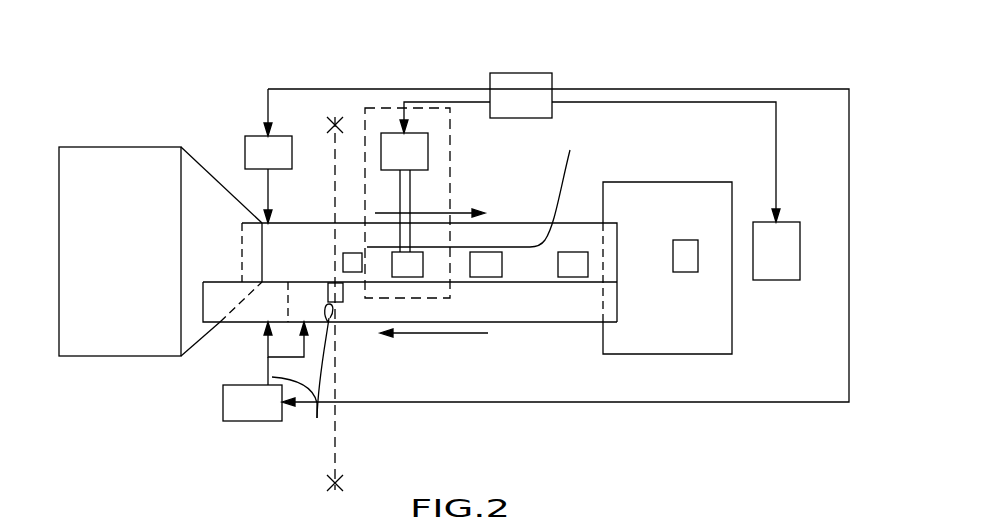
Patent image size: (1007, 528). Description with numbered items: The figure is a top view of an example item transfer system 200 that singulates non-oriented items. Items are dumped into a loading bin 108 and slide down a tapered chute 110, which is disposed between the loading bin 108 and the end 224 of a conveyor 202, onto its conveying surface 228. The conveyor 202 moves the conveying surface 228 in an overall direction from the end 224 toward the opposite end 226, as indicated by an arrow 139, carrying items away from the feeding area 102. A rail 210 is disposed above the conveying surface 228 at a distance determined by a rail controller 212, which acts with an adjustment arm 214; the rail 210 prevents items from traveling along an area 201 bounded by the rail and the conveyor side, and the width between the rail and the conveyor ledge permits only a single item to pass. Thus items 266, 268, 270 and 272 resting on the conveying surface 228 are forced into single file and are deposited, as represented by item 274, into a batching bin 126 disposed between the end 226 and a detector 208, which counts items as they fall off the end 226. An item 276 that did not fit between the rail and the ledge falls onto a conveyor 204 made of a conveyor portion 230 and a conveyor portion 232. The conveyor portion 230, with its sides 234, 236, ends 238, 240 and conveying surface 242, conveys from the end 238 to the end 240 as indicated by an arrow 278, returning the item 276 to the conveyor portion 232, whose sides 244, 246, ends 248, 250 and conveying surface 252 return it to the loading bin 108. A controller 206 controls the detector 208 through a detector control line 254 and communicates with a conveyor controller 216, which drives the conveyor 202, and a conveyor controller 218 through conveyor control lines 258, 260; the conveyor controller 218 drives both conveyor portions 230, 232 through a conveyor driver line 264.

The feeding area 102 is at (136, 378).
The loading bin 108 is at (117, 147).
The chute 110 is at (188, 148).
The batching bin 126 is at (667, 182).
The arrow 139 is at (497, 198).
The item transfer system 200 is at (668, 70).
The area 201 is at (345, 238).
The conveyor 202 is at (292, 223).
The conveyor 204 is at (563, 322).
The controller 206 is at (530, 73).
The detector 208 is at (777, 280).
The rail 210 is at (475, 187).
The rail controller 212 is at (428, 155).
The adjustment arm 214 is at (411, 195).
The conveyor controller 216 is at (250, 128).
The conveyor controller 218 is at (232, 422).
The end 224 is at (242, 233).
The end 226 is at (618, 237).
The conveying surface 228 is at (585, 235).
The conveyor portion 230 is at (588, 322).
The conveyor portion 232 is at (218, 324).
The side 234 is at (508, 282).
The side 236 is at (334, 320).
The end 238 is at (618, 308).
The end 240 is at (302, 382).
The conveying surface 242 is at (532, 318).
The side 244 is at (253, 322).
The side 246 is at (222, 313).
The end 248 is at (255, 320).
The end 250 is at (203, 292).
The conveying surface 252 is at (207, 309).
The detector control line 254 is at (776, 165).
The conveyor control line 258 is at (307, 88).
The conveyor control line 260 is at (773, 88).
The conveyor driver line 264 is at (300, 403).
The item 266 is at (353, 272).
The item 268 is at (408, 268).
The item 270 is at (483, 260).
The item 272 is at (570, 268).
The item 274 is at (686, 240).
The item 276 is at (340, 306).
The arrow 278 is at (488, 334).